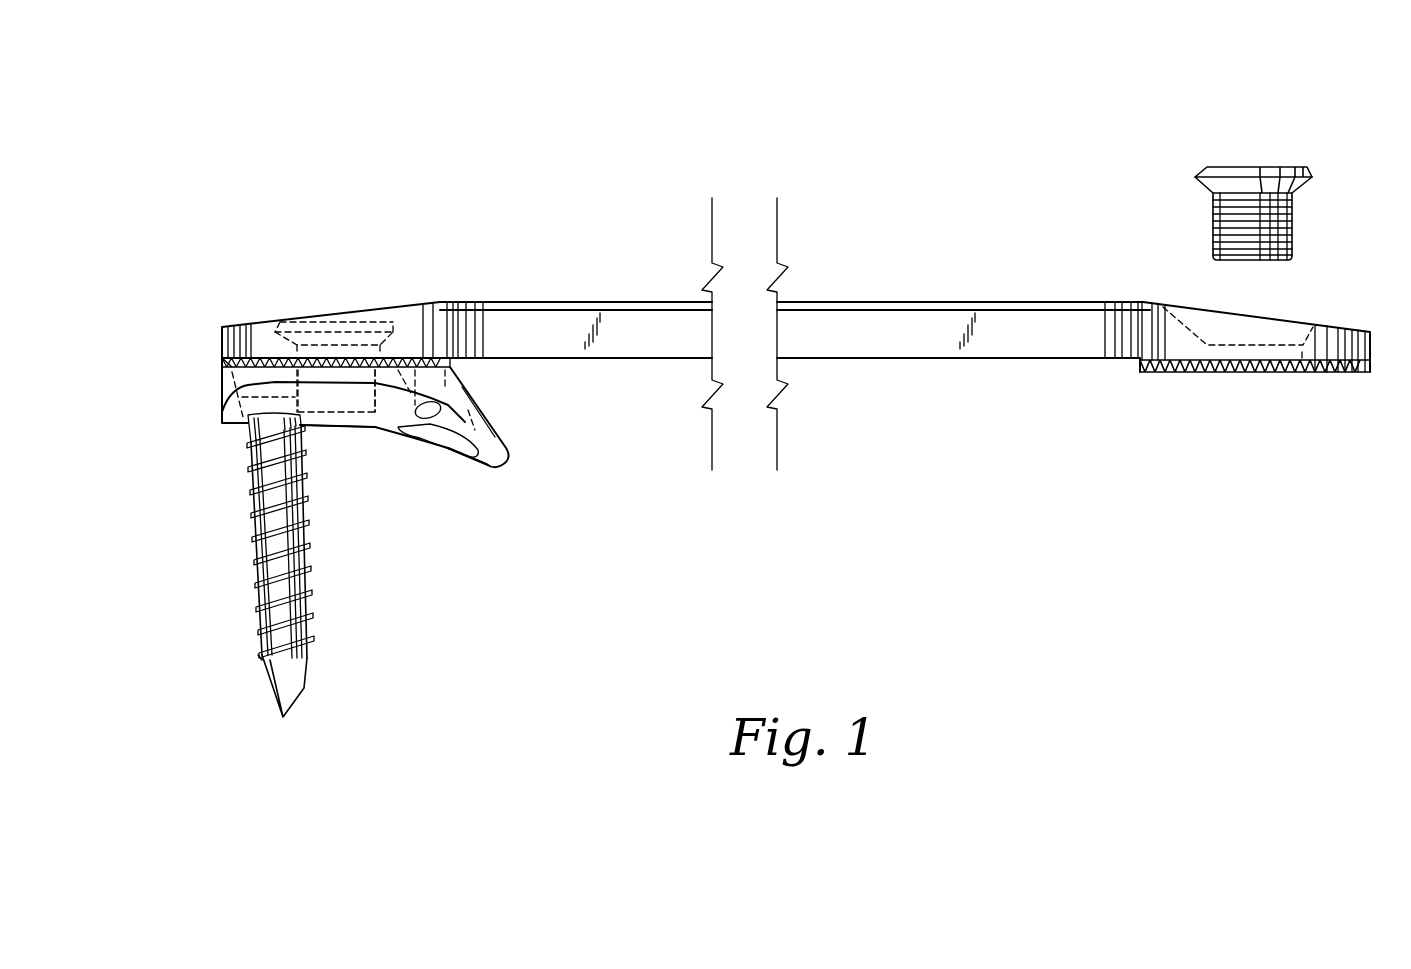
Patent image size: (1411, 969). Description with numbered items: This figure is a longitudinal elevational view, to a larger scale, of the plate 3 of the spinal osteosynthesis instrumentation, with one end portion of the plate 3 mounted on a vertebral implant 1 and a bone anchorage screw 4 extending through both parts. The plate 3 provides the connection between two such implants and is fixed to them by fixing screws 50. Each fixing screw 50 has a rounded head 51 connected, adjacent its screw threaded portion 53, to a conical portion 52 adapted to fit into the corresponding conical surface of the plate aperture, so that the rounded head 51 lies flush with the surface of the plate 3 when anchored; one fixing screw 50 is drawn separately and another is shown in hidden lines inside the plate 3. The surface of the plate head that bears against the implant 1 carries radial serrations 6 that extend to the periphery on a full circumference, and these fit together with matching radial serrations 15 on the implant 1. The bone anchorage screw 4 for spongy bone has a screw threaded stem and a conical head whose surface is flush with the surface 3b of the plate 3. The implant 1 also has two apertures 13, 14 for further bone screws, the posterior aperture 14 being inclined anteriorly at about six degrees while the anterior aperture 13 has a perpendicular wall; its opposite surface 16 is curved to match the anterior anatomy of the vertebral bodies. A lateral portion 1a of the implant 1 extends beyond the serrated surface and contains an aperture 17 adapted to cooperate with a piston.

The vertebral implant 1 is at (343, 433).
The lateral portion 1a is at (507, 460).
The plate 3 is at (779, 320).
The surface of the plate 3b is at (242, 323).
The bone anchorage screw 4 is at (255, 565).
The radial serrations 6 is at (455, 365).
The aperture 13 is at (443, 443).
The aperture 14 is at (258, 424).
The radial serrations 15 is at (242, 363).
The opposite surface 16 is at (373, 430).
The aperture 17 is at (310, 563).
The fixing screw 50 is at (830, 262).
The rounded head 51 is at (1307, 172).
The conical portion 52 is at (1305, 185).
The screw threaded portion 53 is at (1293, 235).